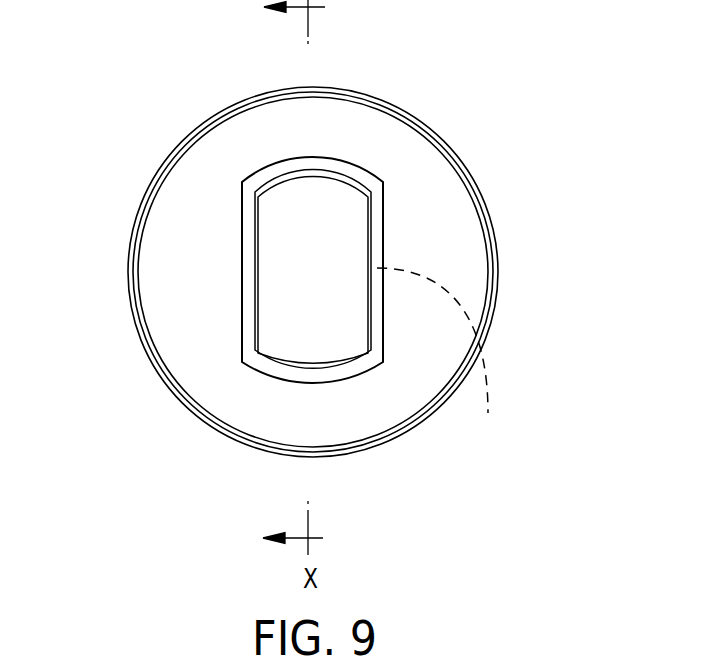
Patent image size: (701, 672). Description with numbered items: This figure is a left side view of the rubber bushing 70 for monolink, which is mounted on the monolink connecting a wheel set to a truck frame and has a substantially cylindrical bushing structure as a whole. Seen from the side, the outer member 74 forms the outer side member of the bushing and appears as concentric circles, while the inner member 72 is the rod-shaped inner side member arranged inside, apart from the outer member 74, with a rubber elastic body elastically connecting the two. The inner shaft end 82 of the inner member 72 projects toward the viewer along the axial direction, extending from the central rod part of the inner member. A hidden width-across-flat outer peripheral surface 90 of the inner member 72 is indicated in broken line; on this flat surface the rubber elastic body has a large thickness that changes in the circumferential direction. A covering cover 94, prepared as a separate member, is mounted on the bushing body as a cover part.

The rubber bushing for monolink 70 is at (500, 126).
The inner member 72 is at (372, 215).
The outer member 74 is at (152, 355).
The inner shaft end 82 is at (295, 322).
The width-across-flat outer peripheral surface 90 is at (439, 357).
The covering cover 94 is at (218, 395).